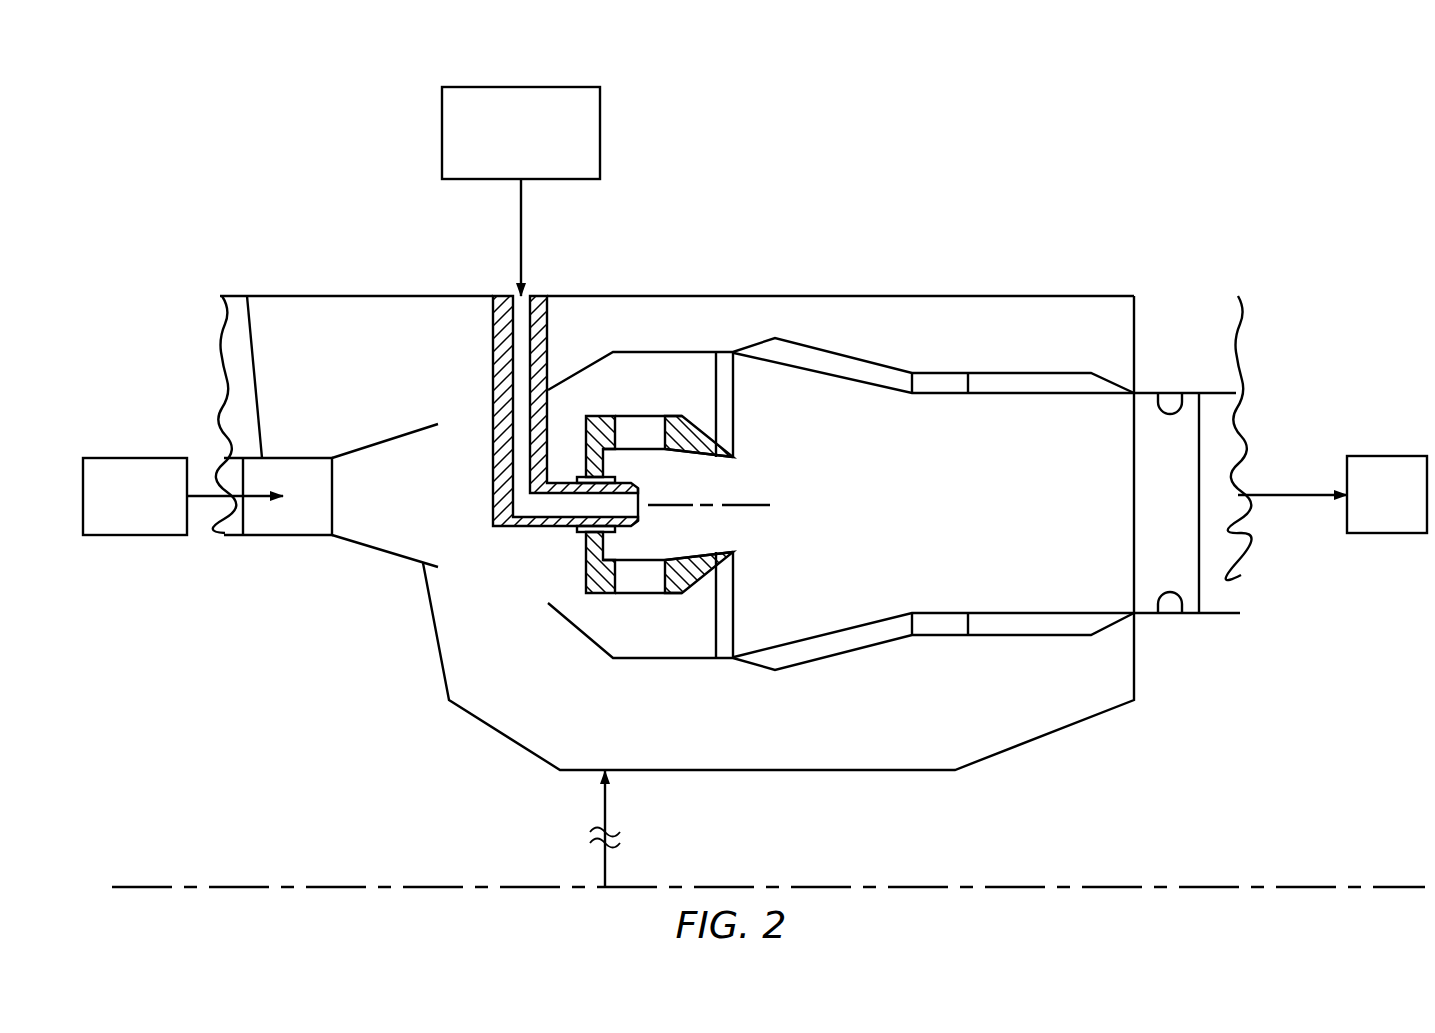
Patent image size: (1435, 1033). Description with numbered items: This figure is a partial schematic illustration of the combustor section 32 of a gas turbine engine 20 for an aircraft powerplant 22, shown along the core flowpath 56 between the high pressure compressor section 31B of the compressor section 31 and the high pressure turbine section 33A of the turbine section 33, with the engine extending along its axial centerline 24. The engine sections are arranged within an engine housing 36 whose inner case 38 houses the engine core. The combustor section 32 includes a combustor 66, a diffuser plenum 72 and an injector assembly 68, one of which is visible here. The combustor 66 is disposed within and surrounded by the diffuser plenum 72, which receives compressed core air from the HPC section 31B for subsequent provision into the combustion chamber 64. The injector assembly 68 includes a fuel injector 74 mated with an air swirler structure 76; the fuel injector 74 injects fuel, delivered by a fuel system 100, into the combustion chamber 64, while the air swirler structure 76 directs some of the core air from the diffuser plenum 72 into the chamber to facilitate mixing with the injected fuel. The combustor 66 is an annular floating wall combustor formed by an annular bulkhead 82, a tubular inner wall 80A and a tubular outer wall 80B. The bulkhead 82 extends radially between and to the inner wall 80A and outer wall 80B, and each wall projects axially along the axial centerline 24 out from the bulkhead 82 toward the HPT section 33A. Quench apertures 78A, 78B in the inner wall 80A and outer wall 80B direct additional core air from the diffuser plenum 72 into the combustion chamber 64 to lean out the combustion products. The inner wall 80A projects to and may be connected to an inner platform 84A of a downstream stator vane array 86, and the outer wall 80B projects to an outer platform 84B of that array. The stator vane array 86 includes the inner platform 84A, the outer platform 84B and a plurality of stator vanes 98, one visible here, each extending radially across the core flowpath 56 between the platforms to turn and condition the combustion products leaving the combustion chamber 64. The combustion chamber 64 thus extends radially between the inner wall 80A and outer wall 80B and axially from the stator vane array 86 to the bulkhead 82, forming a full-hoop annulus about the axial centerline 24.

The gas turbine engine 20 is at (157, 74).
The powerplant 22 is at (205, 113).
The axial centerline 24 is at (120, 886).
The compressor section 31 is at (184, 327).
The high pressure compressor section 31B is at (118, 511).
The combustor section 32 is at (724, 286).
The turbine section 33 is at (1297, 290).
The high pressure turbine section 33A is at (1380, 510).
The engine housing 36 is at (356, 246).
The inner case 38 is at (345, 285).
The core flowpath 56 is at (237, 518).
The combustion chamber 64 is at (889, 513).
The combustor 66 is at (1040, 362).
The injector assembly 68 is at (505, 540).
The diffuser plenum 72 is at (315, 381).
The fuel injector 74 is at (480, 497).
The air swirler structure 76 is at (703, 421).
The quench aperture 78A is at (943, 622).
The quench aperture 78B is at (943, 391).
The inner combustor wall 80A is at (1038, 602).
The outer combustor wall 80B is at (1045, 399).
The combustor bulkhead wall 82 is at (745, 598).
The inner platform 84A is at (1180, 613).
The outer platform 84B is at (1180, 393).
The stator vane array 86 is at (1215, 449).
The stator vane 98 is at (1201, 567).
The fuel system 100 is at (504, 162).